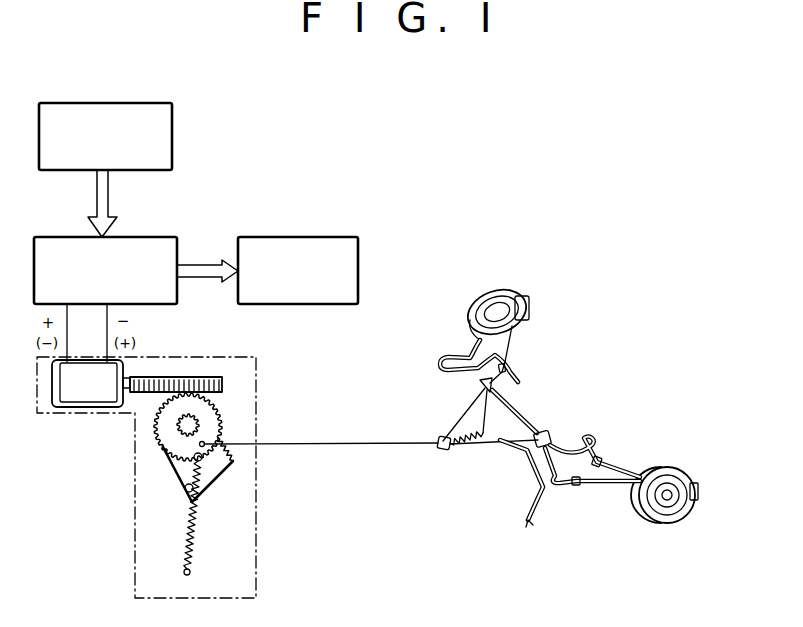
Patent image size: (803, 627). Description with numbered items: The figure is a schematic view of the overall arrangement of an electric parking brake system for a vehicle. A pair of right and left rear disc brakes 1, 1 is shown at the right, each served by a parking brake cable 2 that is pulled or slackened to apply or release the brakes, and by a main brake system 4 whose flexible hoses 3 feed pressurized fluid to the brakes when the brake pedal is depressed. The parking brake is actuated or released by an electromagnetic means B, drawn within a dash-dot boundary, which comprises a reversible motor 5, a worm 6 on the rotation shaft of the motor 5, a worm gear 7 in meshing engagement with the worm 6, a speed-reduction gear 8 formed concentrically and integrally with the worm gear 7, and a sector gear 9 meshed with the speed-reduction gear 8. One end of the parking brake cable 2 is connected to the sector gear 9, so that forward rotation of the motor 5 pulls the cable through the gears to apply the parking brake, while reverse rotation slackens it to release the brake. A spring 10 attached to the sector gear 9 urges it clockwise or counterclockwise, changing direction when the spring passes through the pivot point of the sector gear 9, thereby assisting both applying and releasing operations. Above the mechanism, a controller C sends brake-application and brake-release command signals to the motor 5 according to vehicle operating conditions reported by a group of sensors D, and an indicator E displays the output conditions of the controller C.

The rear disc brake 1 is at (532, 312).
The parking brake cable 2 is at (361, 446).
The flexible hose 3 is at (520, 378).
The main brake system 4 is at (515, 487).
The reversible motor 5 is at (80, 407).
The worm 6 is at (210, 377).
The worm gear 7 is at (223, 410).
The speed-reduction gear 8 is at (178, 424).
The sector gear 9 is at (213, 482).
The spring 10 is at (197, 530).
The electromagnetic means B is at (130, 480).
The controller C is at (162, 237).
The group of sensors D is at (160, 103).
The indicator E is at (331, 237).